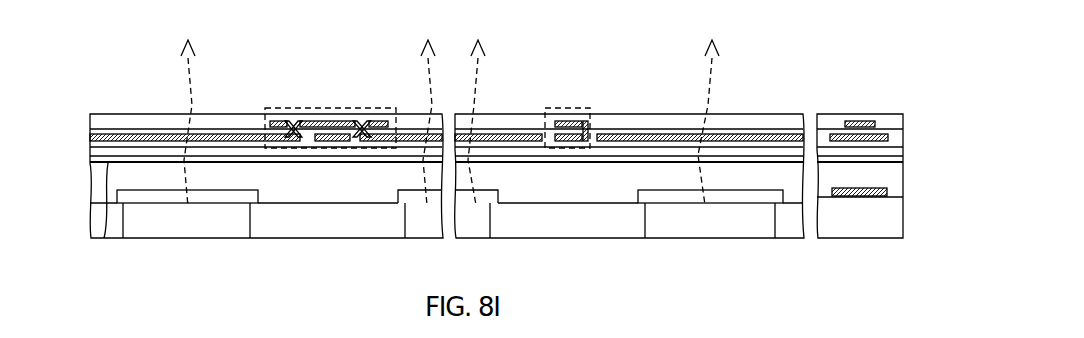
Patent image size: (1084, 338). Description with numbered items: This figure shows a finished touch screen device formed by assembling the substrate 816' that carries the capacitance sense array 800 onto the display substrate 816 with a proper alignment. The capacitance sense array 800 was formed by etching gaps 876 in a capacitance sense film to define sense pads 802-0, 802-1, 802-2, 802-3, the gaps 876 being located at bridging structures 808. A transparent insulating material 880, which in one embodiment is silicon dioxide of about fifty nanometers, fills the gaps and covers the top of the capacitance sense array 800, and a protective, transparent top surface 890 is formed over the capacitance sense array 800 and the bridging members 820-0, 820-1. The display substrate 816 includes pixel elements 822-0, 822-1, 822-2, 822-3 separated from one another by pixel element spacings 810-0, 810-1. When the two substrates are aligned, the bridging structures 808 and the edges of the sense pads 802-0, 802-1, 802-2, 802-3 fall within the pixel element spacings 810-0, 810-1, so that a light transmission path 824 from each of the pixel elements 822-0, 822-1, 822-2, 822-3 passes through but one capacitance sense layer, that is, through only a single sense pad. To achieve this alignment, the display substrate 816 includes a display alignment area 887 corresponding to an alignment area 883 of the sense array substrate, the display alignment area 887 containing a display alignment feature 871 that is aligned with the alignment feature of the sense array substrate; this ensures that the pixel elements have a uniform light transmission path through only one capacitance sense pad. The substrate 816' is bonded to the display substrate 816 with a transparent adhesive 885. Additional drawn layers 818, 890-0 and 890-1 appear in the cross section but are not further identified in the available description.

The capacitance sense array 800 is at (80, 145).
The sense pad 802-0 is at (141, 125).
The sense pad 802-1 is at (497, 122).
The sense pad 802-2 is at (752, 130).
The sense pad 802-3 is at (410, 131).
The bridging structure 808 is at (300, 110).
The pixel element spacing 810-0 is at (405, 244).
The pixel element spacing 810-1 is at (645, 244).
The display substrate 816 is at (215, 200).
The substrate 816' is at (237, 160).
The dielectric layer 818 is at (331, 150).
The bridging member 820-0 is at (278, 95).
The bridging member 820-1 is at (590, 112).
The pixel element 822-0 is at (187, 214).
The pixel element 822-1 is at (476, 214).
The pixel element 822-2 is at (710, 214).
The pixel element 822-3 is at (420, 214).
The light transmission path 824 is at (186, 85).
The display alignment feature 871 is at (846, 197).
The gap 876 is at (347, 157).
The insulating material 880 is at (121, 120).
The alignment area 883 is at (903, 97).
The transparent adhesive 885 is at (104, 238).
The display alignment area 887 is at (903, 239).
The top surface 890 is at (678, 118).
The metal contact 890-0 is at (855, 141).
The metal pad 890-1 is at (848, 121).